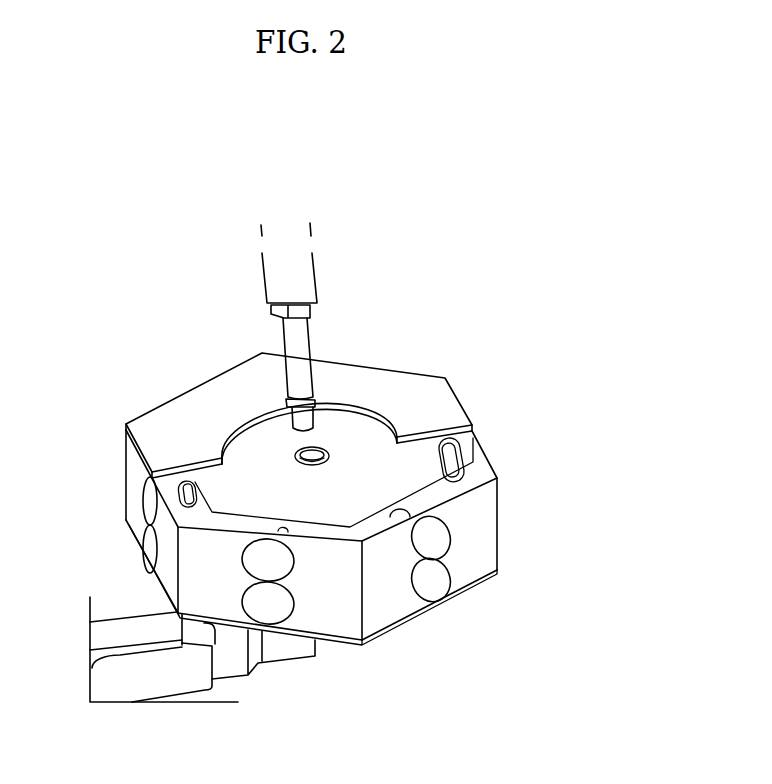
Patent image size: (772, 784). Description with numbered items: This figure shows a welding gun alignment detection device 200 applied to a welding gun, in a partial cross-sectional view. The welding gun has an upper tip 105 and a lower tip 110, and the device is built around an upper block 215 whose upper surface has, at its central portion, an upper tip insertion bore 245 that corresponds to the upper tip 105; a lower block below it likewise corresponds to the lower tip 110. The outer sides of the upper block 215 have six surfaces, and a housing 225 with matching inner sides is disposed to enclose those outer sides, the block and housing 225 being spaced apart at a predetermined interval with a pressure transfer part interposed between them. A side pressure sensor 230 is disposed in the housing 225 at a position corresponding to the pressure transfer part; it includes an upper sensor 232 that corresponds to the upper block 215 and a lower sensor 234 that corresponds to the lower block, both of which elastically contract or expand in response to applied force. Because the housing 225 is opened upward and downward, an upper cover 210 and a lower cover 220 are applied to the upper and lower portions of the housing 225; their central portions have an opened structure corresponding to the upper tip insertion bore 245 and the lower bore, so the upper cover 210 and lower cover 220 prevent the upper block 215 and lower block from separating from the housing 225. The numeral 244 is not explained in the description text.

The upper tip 105 is at (300, 345).
The lower tip 110 is at (270, 650).
The welding gun alignment detection device 200 is at (464, 357).
The upper cover 210 is at (168, 420).
The upper block 215 is at (237, 500).
The lower cover 220 is at (340, 654).
The housing 225 is at (380, 610).
The side pressure sensor 230 is at (549, 586).
The upper sensor 232 is at (434, 543).
The lower sensor 234 is at (428, 590).
The guide slot 244 is at (470, 450).
The upper tip insertion bore 245 is at (322, 447).